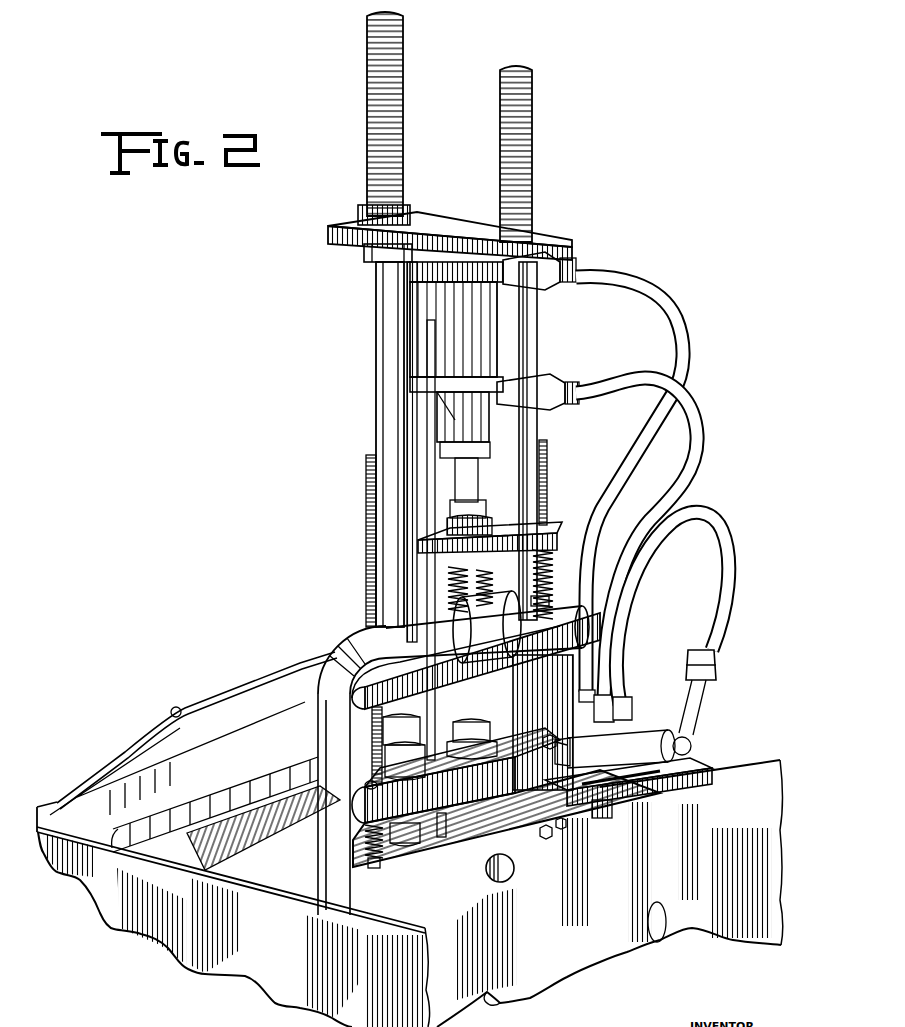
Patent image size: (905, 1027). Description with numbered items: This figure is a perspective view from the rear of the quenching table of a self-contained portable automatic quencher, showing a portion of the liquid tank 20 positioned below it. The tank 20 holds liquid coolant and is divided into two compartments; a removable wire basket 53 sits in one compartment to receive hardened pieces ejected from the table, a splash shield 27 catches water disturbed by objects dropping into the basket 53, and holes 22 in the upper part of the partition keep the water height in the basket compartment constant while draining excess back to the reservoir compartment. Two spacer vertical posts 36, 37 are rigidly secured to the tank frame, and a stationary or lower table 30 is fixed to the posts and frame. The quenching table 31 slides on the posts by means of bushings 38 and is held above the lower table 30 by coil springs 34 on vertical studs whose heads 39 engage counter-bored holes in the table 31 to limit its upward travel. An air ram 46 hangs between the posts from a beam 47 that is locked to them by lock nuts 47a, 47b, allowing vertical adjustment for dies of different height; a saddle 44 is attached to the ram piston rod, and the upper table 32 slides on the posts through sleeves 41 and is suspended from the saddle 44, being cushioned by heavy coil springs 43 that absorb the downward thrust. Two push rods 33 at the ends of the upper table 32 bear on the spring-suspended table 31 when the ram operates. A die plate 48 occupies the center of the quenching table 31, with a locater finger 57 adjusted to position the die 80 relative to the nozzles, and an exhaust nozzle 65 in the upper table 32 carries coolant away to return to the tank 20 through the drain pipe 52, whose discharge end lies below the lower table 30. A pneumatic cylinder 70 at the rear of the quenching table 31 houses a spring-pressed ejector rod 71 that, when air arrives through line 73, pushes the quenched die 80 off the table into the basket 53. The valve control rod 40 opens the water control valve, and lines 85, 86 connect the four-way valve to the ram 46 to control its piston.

The tank 20 is at (735, 762).
The holes 22 is at (492, 1003).
The splash shield 27 is at (176, 708).
The stationary or lower table 30 is at (357, 907).
The quenching table 31 is at (405, 835).
The upper table 32 is at (590, 607).
The push rods 33 is at (547, 466).
The coil springs 34 is at (357, 850).
The spacer vertical post 36 is at (534, 196).
The spacer vertical post 37 is at (404, 167).
The bushings 38 is at (400, 758).
The stud heads 39 is at (365, 808).
The valve control rod 40 is at (433, 362).
The sleeves 41 is at (549, 597).
The heavy coil springs 43 is at (549, 571).
The saddle 44 is at (553, 534).
The air ram 46 is at (500, 342).
The beam 47 is at (327, 238).
The lock nut 47a is at (362, 216).
The lock nut 47b is at (370, 253).
The die plate 48 is at (472, 757).
The drain pipe 52 is at (318, 716).
The removable wire basket 53 is at (200, 805).
The locater finger 57 is at (545, 838).
The exhaust nozzle 65 is at (481, 722).
The pneumatic cylinder 70 is at (628, 745).
The ejector rod 71 is at (547, 740).
The line 73 is at (737, 576).
The die 80 is at (470, 760).
The line 85 is at (710, 461).
The line 86 is at (666, 299).